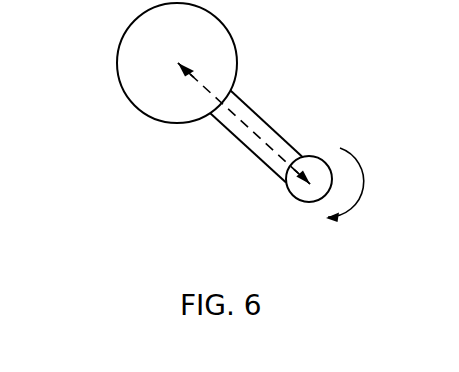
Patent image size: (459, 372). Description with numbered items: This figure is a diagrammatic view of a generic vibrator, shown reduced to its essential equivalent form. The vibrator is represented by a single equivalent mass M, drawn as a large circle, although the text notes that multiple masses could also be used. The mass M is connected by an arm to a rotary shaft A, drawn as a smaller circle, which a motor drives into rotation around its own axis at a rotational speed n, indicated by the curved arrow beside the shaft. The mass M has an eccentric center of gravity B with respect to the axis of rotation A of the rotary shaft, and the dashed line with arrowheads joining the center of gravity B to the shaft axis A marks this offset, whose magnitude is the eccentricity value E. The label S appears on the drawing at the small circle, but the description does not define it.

The equivalent mass M is at (133, 84).
The eccentricity value E is at (243, 122).
The disc S is at (305, 194).
The eccentric center of gravity B is at (232, 110).
The rotary shaft A is at (313, 178).
The rotational speed n is at (362, 185).